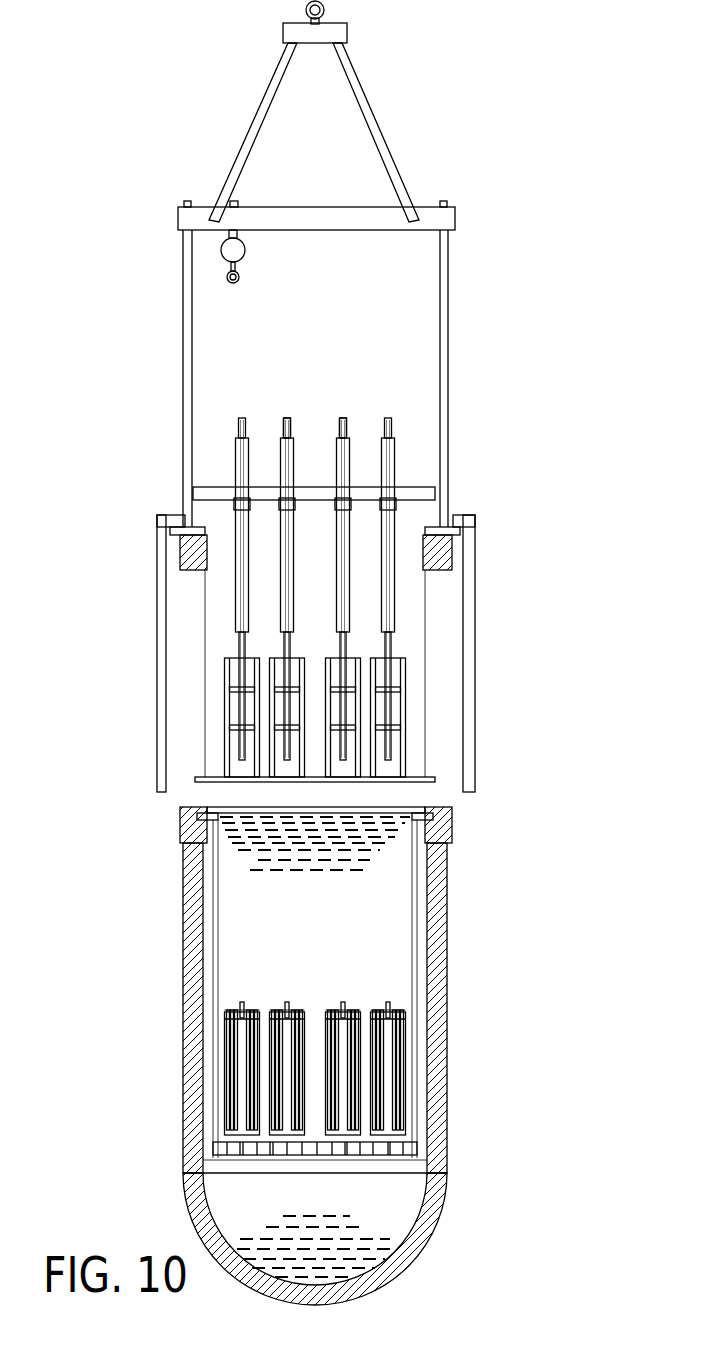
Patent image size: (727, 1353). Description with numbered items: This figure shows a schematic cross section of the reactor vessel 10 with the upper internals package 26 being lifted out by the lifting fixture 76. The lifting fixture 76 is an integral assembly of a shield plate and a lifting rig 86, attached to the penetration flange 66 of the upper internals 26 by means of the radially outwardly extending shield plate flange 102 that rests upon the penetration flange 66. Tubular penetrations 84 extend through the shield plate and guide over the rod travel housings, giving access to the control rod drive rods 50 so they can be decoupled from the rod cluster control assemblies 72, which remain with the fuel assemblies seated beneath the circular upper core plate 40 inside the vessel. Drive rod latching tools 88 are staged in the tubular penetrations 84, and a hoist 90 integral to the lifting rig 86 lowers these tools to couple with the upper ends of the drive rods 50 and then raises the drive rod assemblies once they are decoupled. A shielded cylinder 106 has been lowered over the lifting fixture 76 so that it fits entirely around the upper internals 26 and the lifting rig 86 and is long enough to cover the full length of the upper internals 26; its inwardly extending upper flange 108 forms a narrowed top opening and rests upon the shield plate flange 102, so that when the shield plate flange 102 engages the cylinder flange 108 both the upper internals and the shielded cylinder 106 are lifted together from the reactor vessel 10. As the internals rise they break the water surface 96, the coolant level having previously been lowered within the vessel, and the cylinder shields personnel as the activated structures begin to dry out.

The reactor vessel 10 is at (447, 1060).
The upper internals package 26 is at (311, 713).
The upper core plate 40 is at (410, 783).
The drive rod 50 is at (390, 711).
The penetration flange 66 is at (445, 556).
The rod cluster control assemblies 72 is at (390, 1008).
The lifting fixture 76 is at (468, 328).
The tubular penetrations 84 is at (355, 440).
The lifting rig 86 is at (389, 102).
The drive rod latching tools 88 is at (343, 440).
The hoist 90 is at (240, 249).
The coolant level 96 is at (222, 807).
The shield plate flange 102 is at (183, 516).
The shielded cylinder 106 is at (476, 600).
The inwardly extending upper flange 108 is at (462, 512).